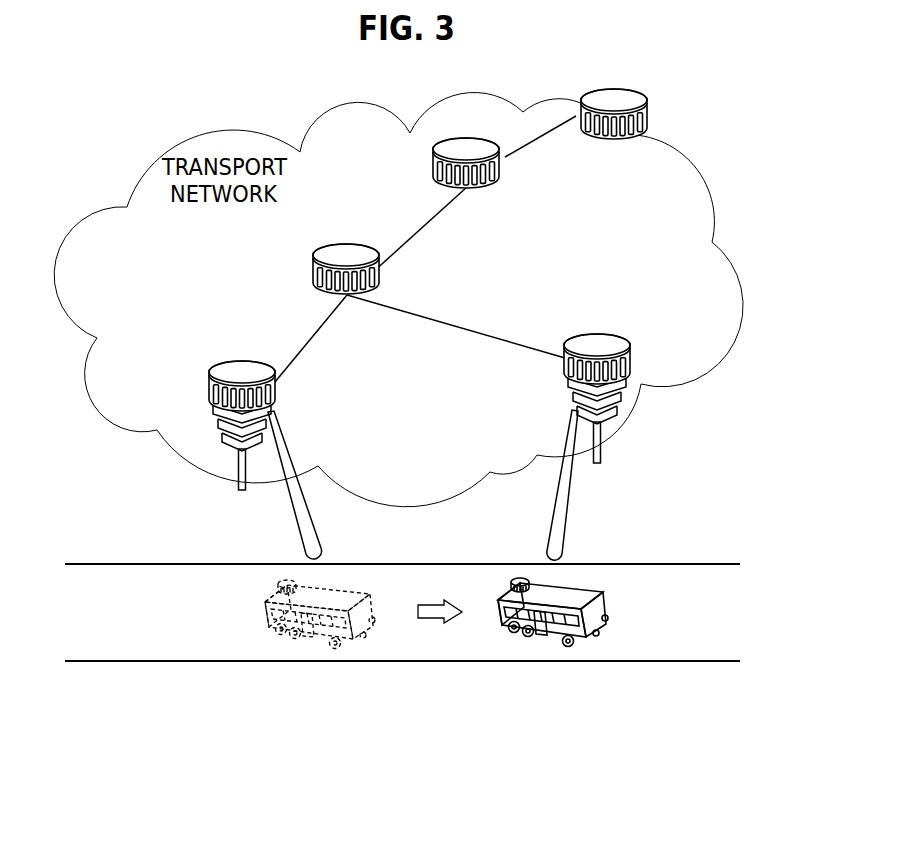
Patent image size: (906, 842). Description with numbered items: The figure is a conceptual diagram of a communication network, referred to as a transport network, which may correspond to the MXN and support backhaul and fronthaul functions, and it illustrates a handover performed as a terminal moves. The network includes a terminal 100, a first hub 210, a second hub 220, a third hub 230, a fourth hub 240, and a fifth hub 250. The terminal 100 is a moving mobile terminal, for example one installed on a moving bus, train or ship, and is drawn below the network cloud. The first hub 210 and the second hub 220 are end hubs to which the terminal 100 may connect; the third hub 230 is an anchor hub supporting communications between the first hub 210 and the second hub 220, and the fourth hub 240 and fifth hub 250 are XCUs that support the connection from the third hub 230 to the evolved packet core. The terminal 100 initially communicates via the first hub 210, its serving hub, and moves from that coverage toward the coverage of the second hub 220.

The terminal 100 is at (558, 696).
The first hub 210 is at (277, 392).
The second hub 220 is at (627, 390).
The third hub 230 is at (313, 268).
The fourth hub 240 is at (431, 164).
The fifth hub 250 is at (648, 116).